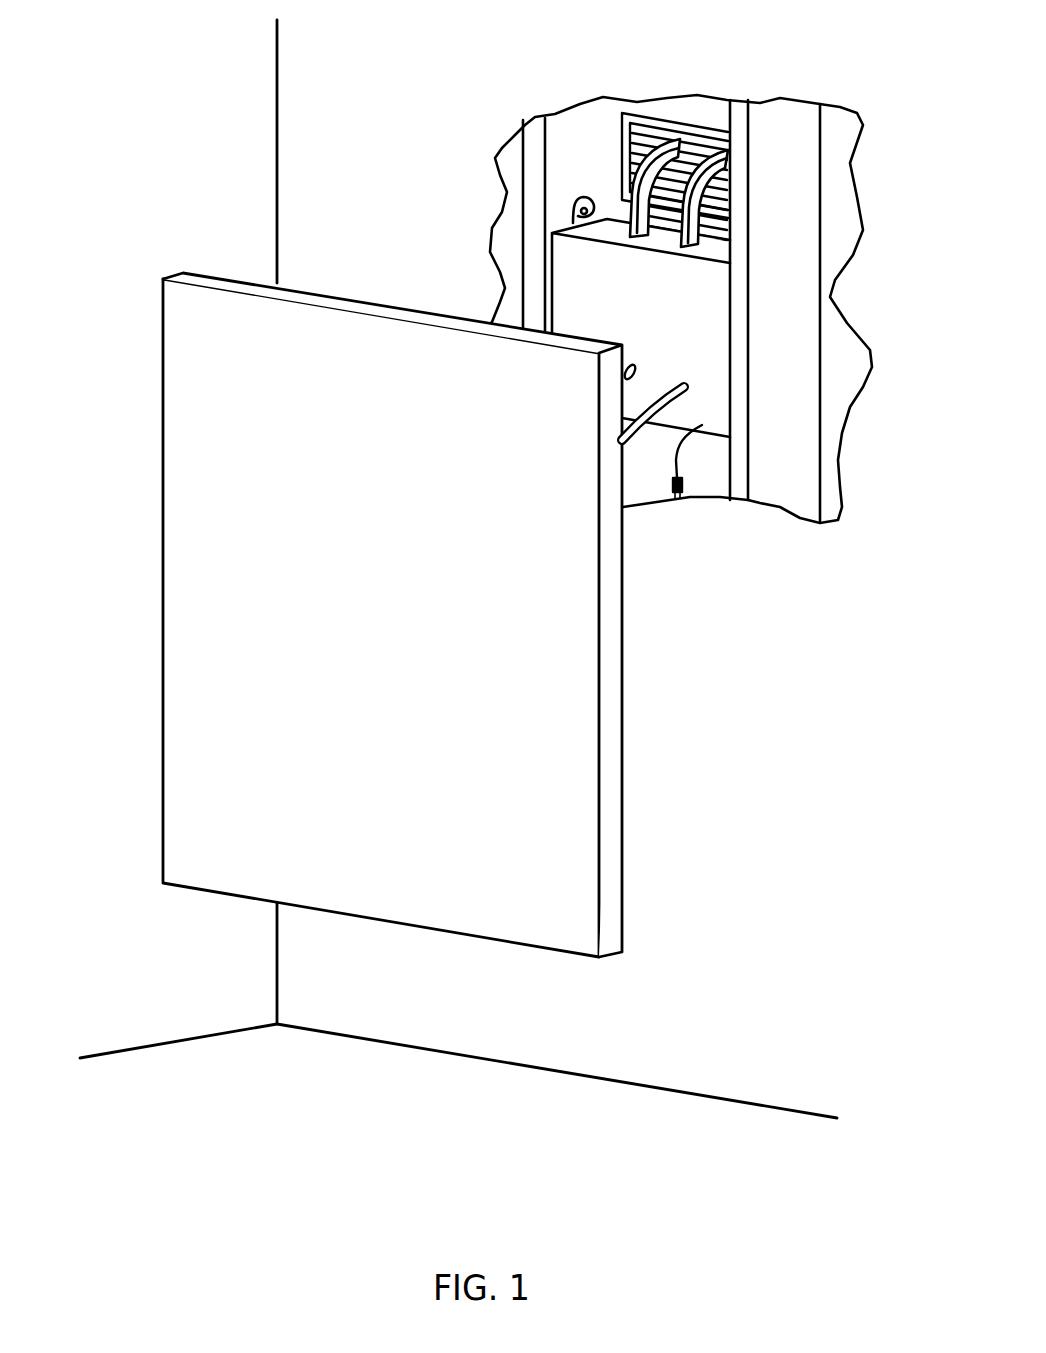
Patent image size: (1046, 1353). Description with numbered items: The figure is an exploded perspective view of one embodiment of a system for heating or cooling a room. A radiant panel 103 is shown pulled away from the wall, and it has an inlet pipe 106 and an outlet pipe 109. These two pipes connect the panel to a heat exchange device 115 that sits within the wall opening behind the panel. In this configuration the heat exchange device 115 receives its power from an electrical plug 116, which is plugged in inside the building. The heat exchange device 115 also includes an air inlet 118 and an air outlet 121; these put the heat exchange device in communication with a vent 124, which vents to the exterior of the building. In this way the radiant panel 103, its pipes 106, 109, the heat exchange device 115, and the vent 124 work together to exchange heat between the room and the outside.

The radiant panel 103 is at (203, 412).
The inlet pipe 106 is at (633, 380).
The outlet pipe 109 is at (690, 395).
The heat exchange device 115 is at (707, 333).
The electrical plug 116 is at (695, 453).
The air inlet 118 is at (630, 162).
The air outlet 121 is at (708, 157).
The vent 124 is at (693, 130).